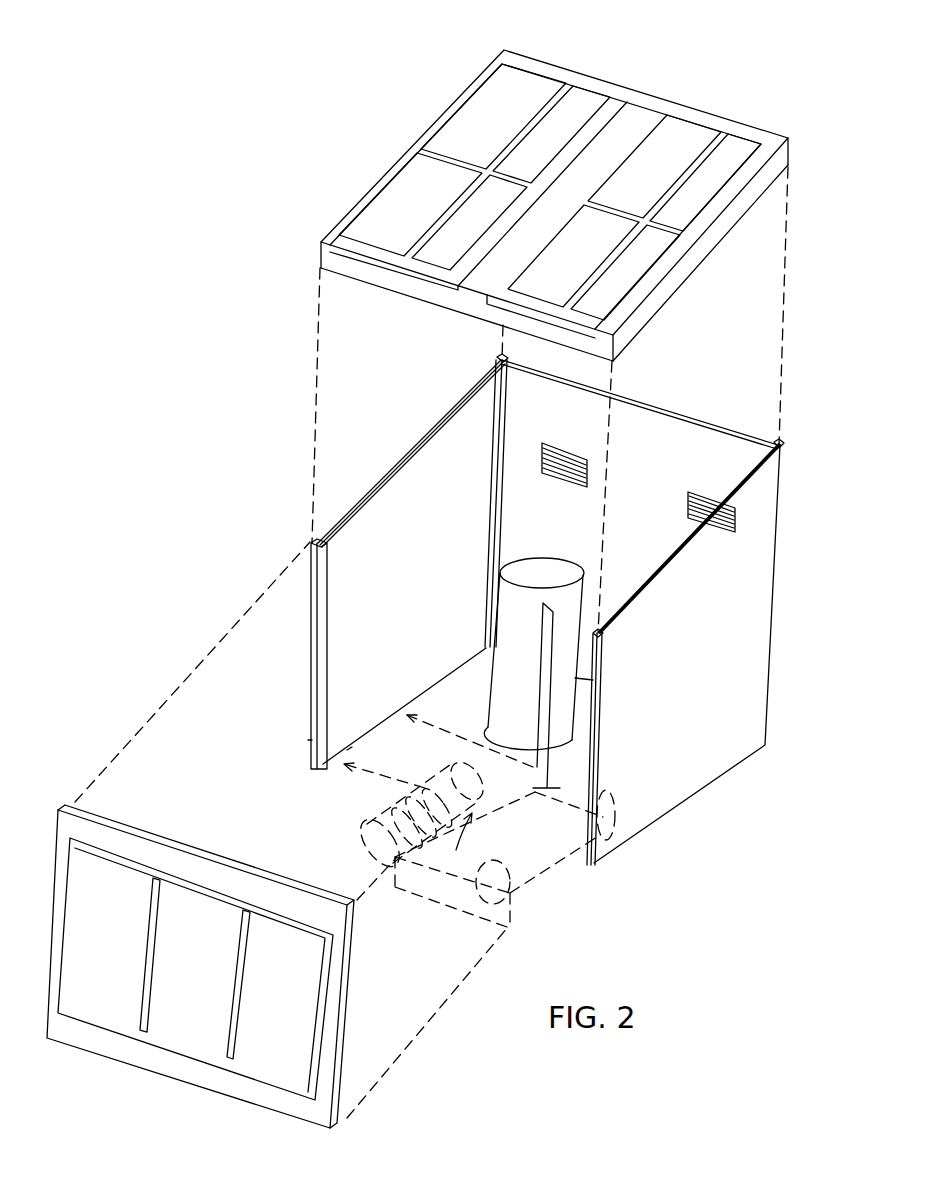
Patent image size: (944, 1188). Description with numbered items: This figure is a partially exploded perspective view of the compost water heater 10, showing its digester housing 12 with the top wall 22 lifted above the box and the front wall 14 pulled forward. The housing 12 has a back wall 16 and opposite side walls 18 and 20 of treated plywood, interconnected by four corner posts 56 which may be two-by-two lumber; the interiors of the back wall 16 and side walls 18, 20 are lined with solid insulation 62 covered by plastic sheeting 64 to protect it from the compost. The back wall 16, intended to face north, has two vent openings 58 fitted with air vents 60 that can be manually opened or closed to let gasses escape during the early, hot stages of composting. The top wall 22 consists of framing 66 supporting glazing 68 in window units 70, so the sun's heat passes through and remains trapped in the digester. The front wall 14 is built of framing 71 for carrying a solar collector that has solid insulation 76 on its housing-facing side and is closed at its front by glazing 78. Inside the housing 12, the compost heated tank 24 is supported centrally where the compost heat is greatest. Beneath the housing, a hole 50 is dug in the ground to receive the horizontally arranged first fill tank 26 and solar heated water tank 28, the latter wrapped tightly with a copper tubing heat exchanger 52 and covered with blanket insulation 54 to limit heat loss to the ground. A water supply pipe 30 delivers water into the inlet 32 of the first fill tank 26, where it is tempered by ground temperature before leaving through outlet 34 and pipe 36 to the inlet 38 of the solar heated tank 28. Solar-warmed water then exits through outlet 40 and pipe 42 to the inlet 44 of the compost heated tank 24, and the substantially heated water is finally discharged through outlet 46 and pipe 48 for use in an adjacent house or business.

The compost water heater 10 is at (223, 189).
The digester housing 12 is at (776, 593).
The front wall 14 is at (345, 1002).
The back wall 16 is at (700, 432).
The side wall 18 is at (750, 670).
The side wall 20 is at (390, 465).
The top wall 22 is at (742, 131).
The compost heated tank 24 is at (560, 665).
The first fill tank 26 is at (547, 857).
The solar heated water tank 28 is at (367, 833).
The water supply pipe 30 is at (363, 777).
The inlet 32 is at (603, 833).
The outlet 34 is at (512, 895).
The pipe 36 is at (433, 900).
The inlet 38 is at (400, 857).
The outlet 40 is at (455, 842).
The pipe 42 is at (533, 792).
The inlet 44 is at (543, 603).
The outlet 46 is at (523, 733).
The pipe 48 is at (347, 750).
The hole 50 is at (308, 739).
The heat exchanger 52 is at (365, 806).
The blanket insulation 54 is at (375, 780).
The corner posts 56 is at (497, 363).
The vent openings 58 is at (570, 450).
The air vents 60 is at (575, 470).
The solid insulation 62 is at (427, 428).
The plastic sheeting 64 is at (448, 443).
The framing 66 is at (760, 183).
The glazing 68 is at (408, 198).
The window units 70 is at (546, 70).
The framing 71 is at (72, 815).
The solid insulation 76 is at (108, 806).
The glazing 78 is at (97, 923).